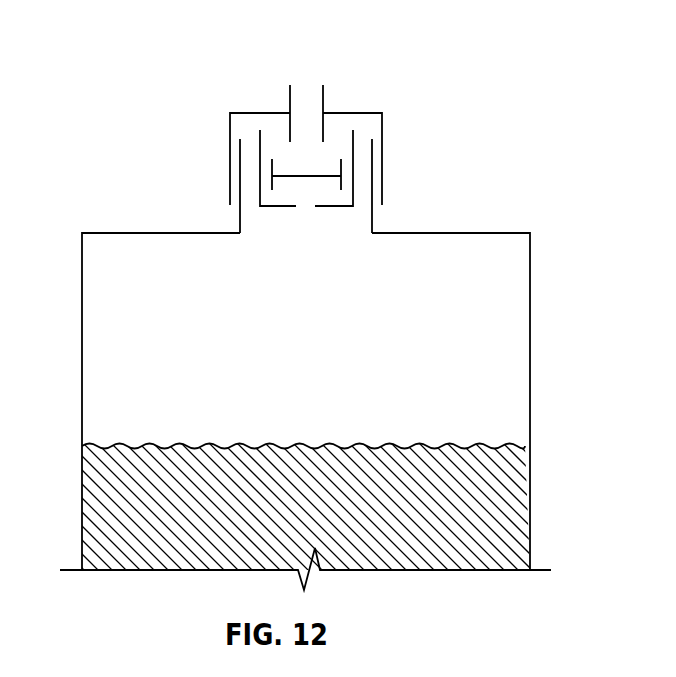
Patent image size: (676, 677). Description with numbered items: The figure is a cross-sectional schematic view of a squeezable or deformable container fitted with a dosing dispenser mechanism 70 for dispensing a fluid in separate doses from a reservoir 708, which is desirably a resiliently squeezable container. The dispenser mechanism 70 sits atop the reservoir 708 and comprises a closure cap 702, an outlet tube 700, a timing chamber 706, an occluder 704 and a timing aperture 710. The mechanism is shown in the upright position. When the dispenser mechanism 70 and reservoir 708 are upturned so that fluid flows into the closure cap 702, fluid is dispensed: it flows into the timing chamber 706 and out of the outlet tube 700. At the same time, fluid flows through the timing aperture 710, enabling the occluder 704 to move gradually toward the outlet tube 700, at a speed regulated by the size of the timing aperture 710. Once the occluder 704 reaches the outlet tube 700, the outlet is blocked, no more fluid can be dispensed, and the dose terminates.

The dosing dispenser mechanism 70 is at (224, 108).
The outlet tube 700 is at (290, 90).
The closure cap 702 is at (352, 112).
The occluder 704 is at (341, 168).
The timing chamber 706 is at (260, 158).
The reservoir 708 is at (82, 309).
The timing aperture 710 is at (309, 219).